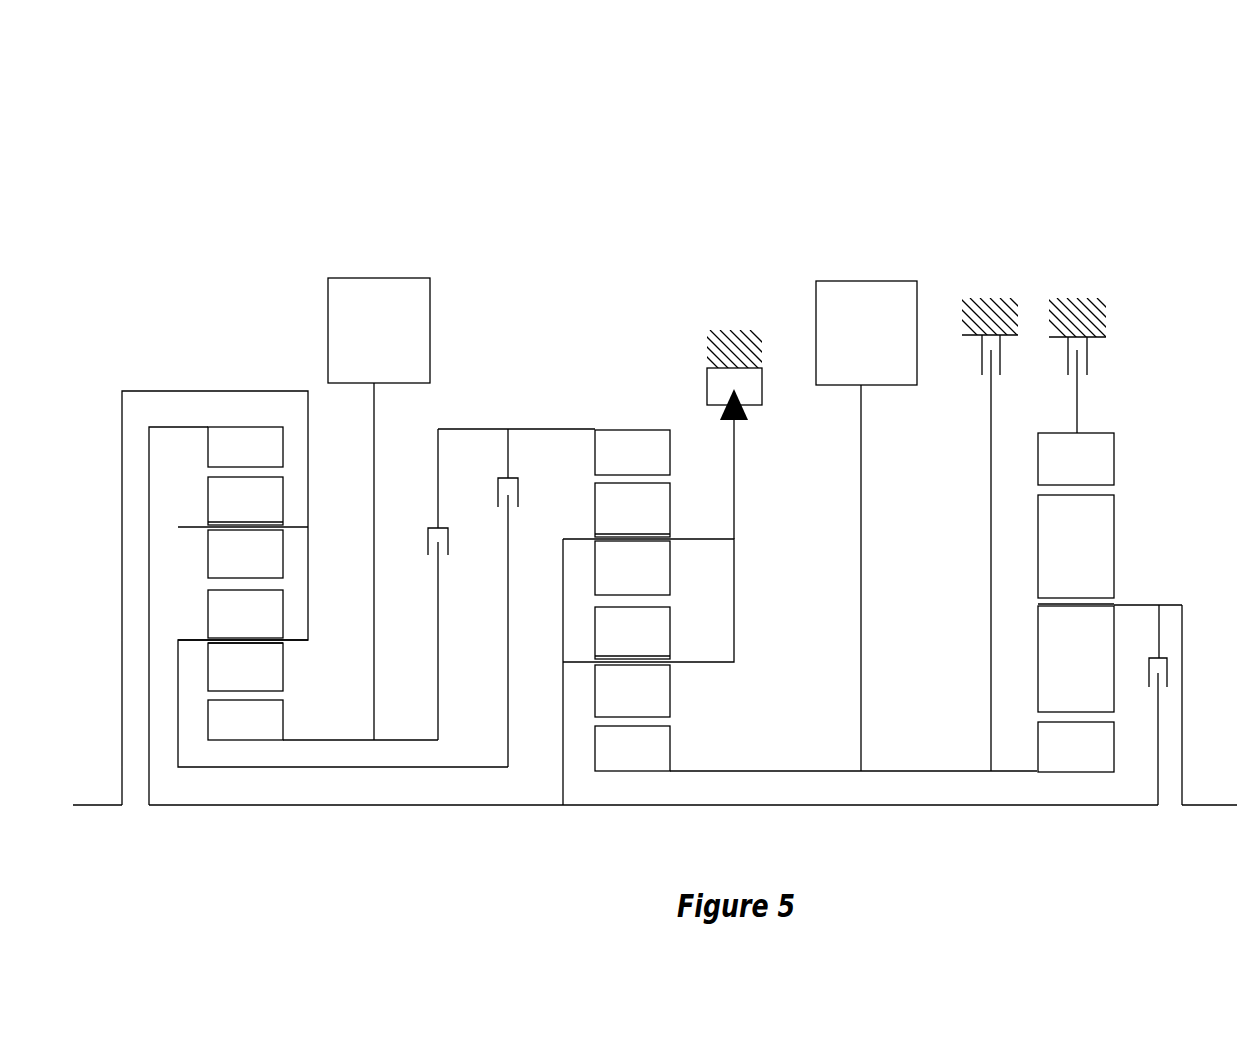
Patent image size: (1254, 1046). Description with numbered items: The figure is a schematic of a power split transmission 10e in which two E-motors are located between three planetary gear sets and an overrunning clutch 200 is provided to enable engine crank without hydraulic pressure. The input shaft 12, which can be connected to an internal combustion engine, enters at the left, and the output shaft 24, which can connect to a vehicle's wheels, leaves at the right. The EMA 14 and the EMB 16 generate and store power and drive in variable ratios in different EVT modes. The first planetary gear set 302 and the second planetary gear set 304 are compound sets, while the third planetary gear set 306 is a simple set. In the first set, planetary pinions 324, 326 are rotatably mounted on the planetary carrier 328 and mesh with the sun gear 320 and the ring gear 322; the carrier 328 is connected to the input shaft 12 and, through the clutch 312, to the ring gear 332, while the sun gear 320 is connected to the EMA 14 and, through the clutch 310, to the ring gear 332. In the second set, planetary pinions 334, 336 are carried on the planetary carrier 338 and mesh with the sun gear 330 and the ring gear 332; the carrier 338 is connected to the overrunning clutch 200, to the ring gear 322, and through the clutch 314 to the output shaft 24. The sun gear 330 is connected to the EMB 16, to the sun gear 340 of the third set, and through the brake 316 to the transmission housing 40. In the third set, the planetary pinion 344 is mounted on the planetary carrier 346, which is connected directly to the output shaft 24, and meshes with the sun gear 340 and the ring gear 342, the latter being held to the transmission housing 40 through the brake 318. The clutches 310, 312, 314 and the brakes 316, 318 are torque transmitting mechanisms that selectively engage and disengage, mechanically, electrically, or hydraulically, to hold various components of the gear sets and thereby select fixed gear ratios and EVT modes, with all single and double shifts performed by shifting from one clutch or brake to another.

The power split transmission 10e is at (746, 152).
The input shaft 12 is at (100, 806).
The output shaft 24 is at (1196, 806).
The EMA 14 is at (387, 278).
The EMB 16 is at (867, 281).
The transmission housing 40 is at (992, 272).
The overrunning clutch 200 is at (764, 404).
The first planetary gear set 302 is at (239, 348).
The second planetary gear set 304 is at (643, 332).
The third planetary gear set 306 is at (1128, 398).
The clutch 310 is at (412, 568).
The clutch 312 is at (483, 525).
The clutch 314 is at (1140, 698).
The brake 316 is at (948, 351).
The brake 318 is at (1112, 357).
The sun gear 320 is at (283, 739).
The ring gear 322 is at (247, 427).
The planetary pinion 324 is at (283, 673).
The planetary pinion 326 is at (208, 513).
The planetary carrier 328 is at (308, 588).
The sun gear 330 is at (670, 762).
The ring gear 332 is at (651, 430).
The planetary pinion 334 is at (670, 680).
The planetary pinion 336 is at (671, 507).
The planetary carrier 338 is at (734, 585).
The sun gear 340 is at (1073, 772).
The ring gear 342 is at (1114, 460).
The planetary pinion 344 is at (1114, 540).
The planetary carrier 346 is at (1170, 605).